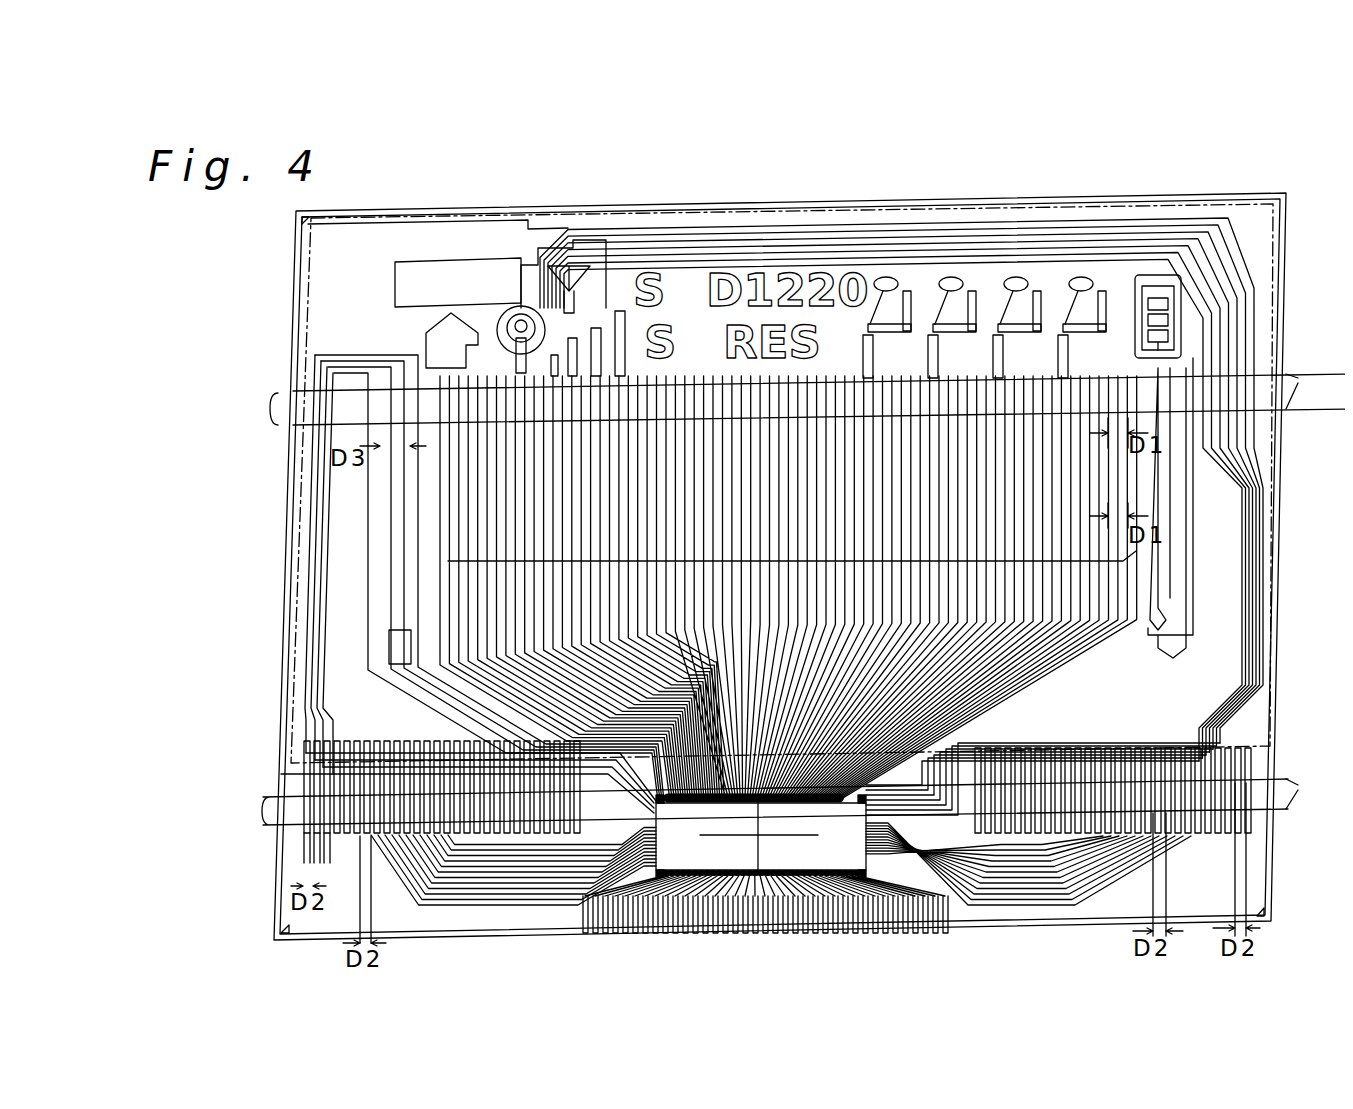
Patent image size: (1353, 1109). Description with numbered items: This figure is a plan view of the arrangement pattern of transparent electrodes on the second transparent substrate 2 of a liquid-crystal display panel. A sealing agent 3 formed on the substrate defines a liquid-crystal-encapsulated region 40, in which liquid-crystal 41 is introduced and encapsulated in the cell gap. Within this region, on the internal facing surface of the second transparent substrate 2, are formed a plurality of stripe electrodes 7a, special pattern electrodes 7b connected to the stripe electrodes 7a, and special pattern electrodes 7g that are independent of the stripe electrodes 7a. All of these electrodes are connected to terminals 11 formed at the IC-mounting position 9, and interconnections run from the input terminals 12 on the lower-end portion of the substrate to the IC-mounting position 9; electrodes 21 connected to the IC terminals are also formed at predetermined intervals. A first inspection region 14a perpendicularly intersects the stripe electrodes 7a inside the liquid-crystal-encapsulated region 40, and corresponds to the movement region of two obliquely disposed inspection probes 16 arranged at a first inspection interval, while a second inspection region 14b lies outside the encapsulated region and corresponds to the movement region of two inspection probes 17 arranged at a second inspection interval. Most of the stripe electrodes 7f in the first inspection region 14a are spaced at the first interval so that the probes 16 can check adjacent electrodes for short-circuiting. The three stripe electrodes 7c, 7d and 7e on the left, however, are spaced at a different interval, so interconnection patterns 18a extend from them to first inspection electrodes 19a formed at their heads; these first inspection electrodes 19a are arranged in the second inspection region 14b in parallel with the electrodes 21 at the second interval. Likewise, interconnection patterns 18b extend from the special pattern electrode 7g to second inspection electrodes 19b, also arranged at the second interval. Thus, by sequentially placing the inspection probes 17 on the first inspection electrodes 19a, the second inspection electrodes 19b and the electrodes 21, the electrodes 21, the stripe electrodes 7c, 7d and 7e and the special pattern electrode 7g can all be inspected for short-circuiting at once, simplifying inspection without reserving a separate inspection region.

The second transparent substrate 2 is at (1125, 190).
The sealing agent 3 is at (288, 318).
The stripe electrodes 7a is at (479, 578).
The special pattern electrodes 7b is at (1095, 272).
The stripe electrode 7c is at (795, 557).
The stripe electrode 7d is at (420, 553).
The stripe electrode 7e is at (400, 545).
The stripe electrodes 7f is at (392, 622).
The special pattern electrodes 7g is at (580, 252).
The IC-mounting position 9 is at (710, 855).
The terminals 11 is at (855, 830).
The input terminals 12 is at (945, 930).
The first inspection region 14a is at (775, 399).
The second inspection region 14b is at (741, 802).
The inspection probes 16 is at (1308, 385).
The inspection probes 17 is at (1302, 789).
The interconnection patterns 18a is at (320, 528).
The interconnection patterns 18b is at (1225, 557).
The first inspection electrodes 19a is at (330, 738).
The second inspection electrodes 19b is at (1205, 735).
The electrodes 21 is at (1180, 708).
The liquid-crystal-encapsulated region 40 is at (378, 233).
The liquid-crystal 41 is at (438, 233).